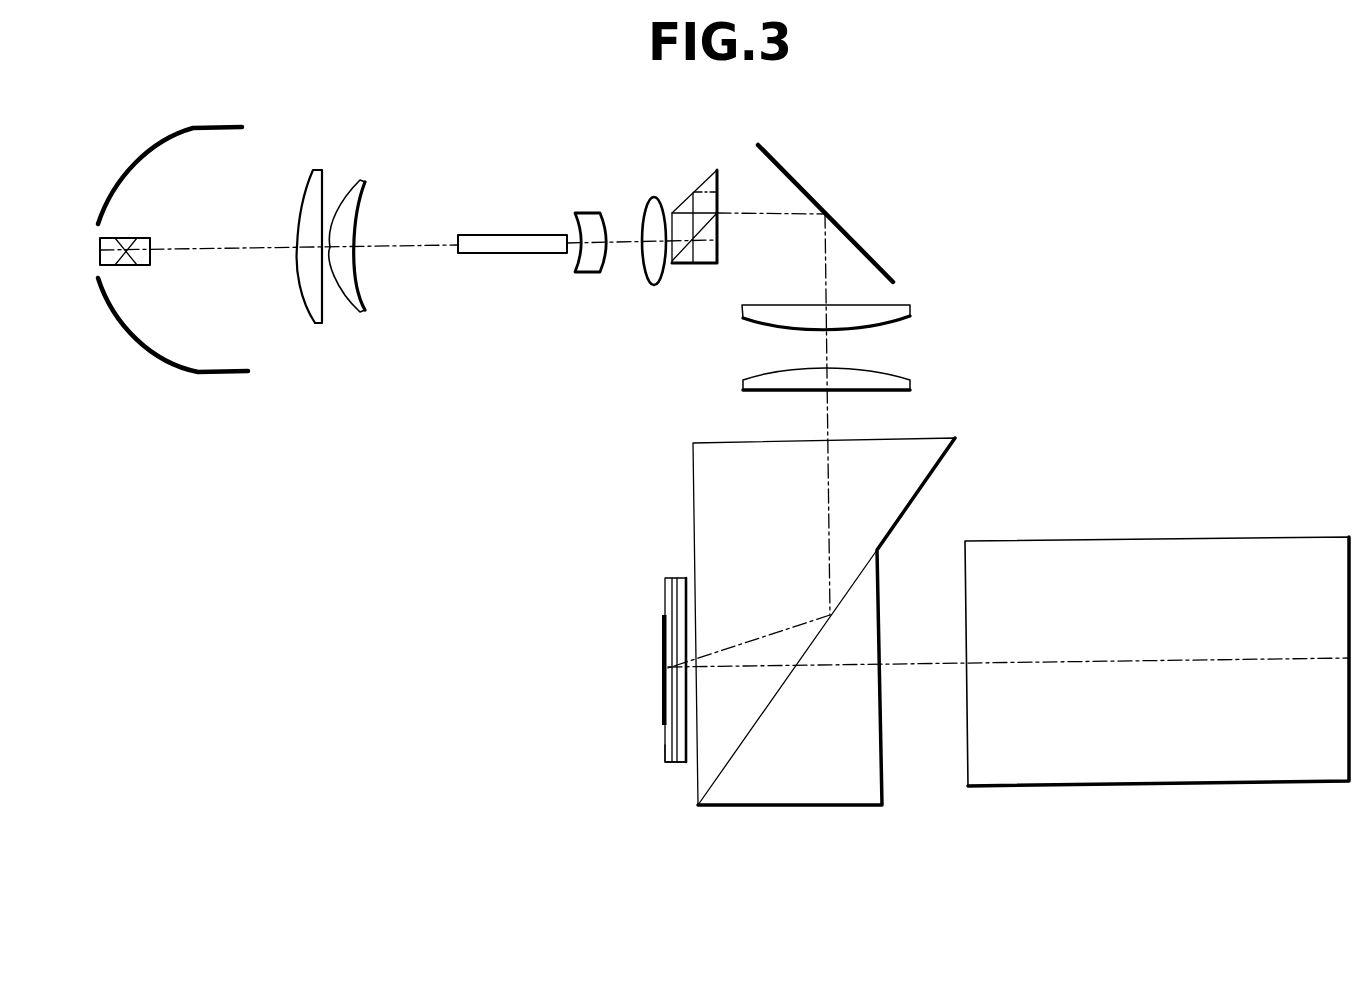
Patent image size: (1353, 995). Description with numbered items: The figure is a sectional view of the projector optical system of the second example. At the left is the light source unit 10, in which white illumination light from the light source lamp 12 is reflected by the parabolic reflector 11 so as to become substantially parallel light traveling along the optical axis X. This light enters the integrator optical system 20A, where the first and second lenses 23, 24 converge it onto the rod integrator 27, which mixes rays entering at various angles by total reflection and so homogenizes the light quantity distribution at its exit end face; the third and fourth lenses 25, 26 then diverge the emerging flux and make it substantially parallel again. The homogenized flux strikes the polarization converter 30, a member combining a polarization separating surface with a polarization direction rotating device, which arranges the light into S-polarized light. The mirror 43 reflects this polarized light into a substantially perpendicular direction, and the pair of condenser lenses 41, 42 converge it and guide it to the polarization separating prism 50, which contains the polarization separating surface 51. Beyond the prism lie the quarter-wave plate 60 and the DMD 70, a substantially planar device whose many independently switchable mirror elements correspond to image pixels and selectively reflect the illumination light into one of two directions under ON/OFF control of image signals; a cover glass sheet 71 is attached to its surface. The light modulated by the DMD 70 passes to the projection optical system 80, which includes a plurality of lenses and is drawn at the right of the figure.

The light source unit 10 is at (173, 208).
The parabolic reflector 11 is at (181, 137).
The light source lamp 12 is at (123, 238).
The optical axis X is at (207, 251).
The integrator optical system 20A is at (488, 133).
The first lens 23 is at (320, 170).
The second lens 24 is at (363, 181).
The third lens 25 is at (588, 213).
The fourth lens 26 is at (651, 198).
The rod integrator 27 is at (497, 235).
The polarization converter 30 is at (712, 169).
The condenser lens 41 is at (912, 307).
The condenser lens 42 is at (912, 382).
The mirror 43 is at (796, 178).
The polarization separating prism 50 is at (824, 652).
The polarization separating surface 51 is at (753, 727).
The quarter-wave plate 60 is at (683, 762).
The DMD 70 is at (662, 638).
The cover glass sheet 71 is at (666, 751).
The projection optical system 80 is at (1188, 540).